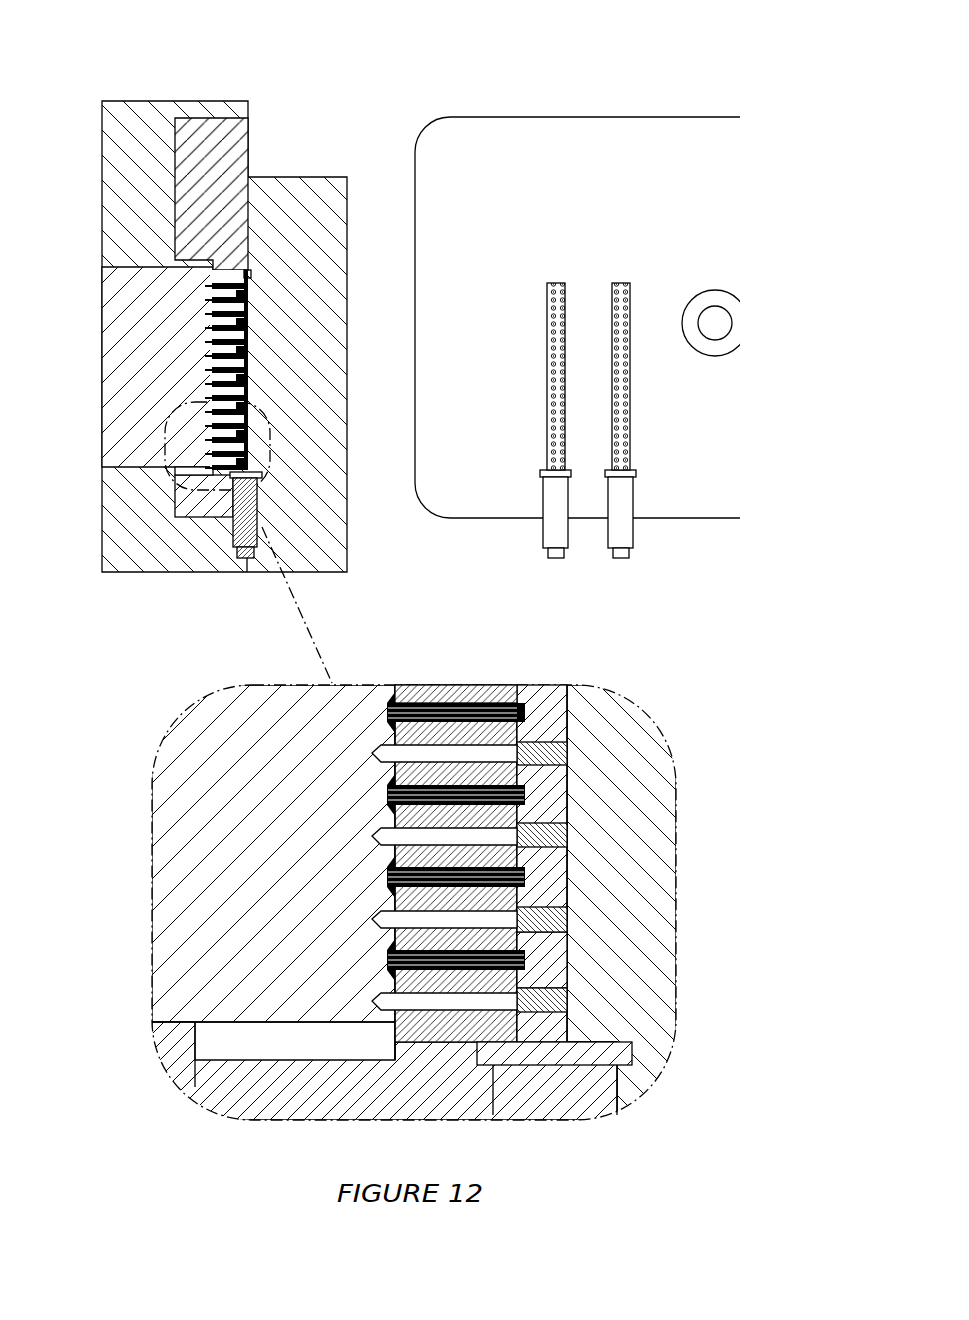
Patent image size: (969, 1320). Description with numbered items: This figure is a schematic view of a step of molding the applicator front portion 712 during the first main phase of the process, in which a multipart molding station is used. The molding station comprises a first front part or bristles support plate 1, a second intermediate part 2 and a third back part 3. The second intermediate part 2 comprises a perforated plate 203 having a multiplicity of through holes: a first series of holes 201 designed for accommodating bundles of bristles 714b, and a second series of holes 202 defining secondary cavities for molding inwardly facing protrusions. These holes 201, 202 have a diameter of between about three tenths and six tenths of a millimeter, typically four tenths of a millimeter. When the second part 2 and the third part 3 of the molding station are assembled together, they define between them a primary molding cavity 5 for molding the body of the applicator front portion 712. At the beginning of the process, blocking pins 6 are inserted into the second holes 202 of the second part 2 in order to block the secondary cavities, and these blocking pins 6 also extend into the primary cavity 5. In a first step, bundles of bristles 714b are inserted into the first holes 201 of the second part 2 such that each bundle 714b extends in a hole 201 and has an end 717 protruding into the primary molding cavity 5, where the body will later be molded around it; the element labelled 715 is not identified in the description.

The first front part or bristles support plate 1 is at (120, 332).
The second intermediate part 2 is at (238, 138).
The third back part 3 is at (310, 212).
The primary molding cavity 5 is at (247, 277).
The blocking pins 6 is at (248, 317).
The first series of holes 201 is at (556, 290).
The second series of holes 202 is at (550, 295).
The perforated plate 203 is at (593, 498).
The bundles of bristles 714b is at (473, 702).
The end 717 is at (545, 712).
The applicator front portion 712 is at (553, 963).
The screw head 715 is at (598, 1088).